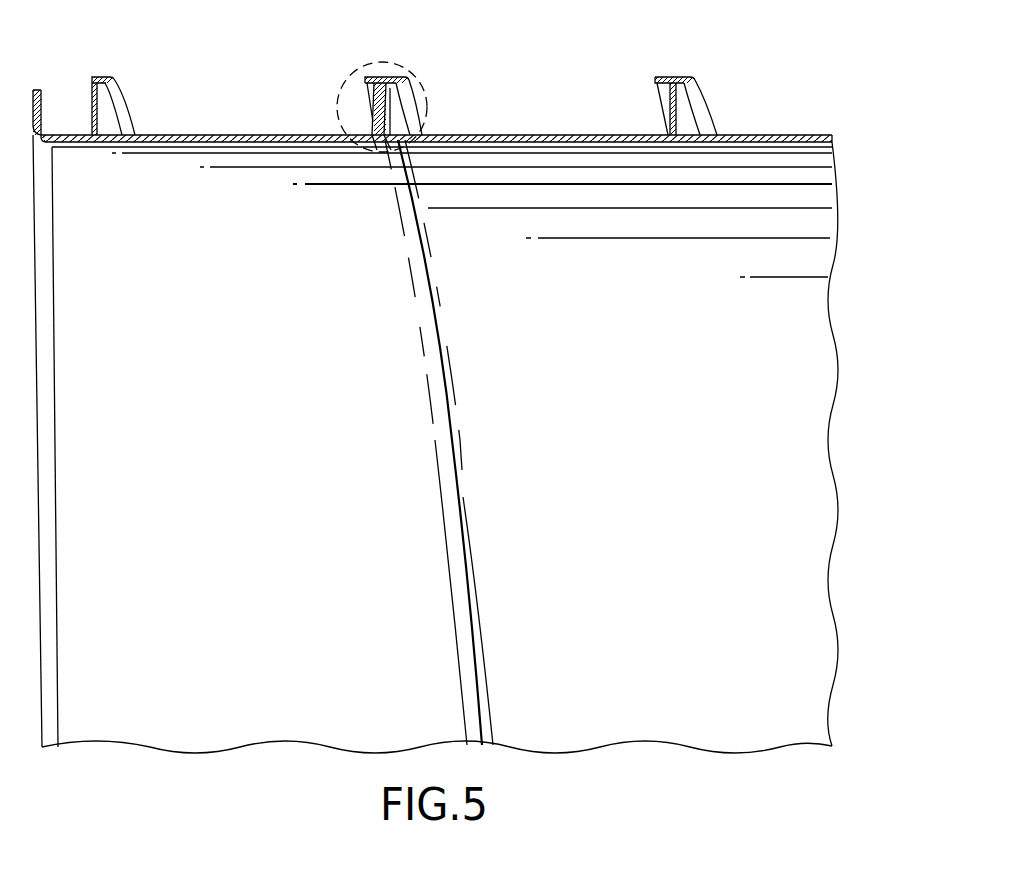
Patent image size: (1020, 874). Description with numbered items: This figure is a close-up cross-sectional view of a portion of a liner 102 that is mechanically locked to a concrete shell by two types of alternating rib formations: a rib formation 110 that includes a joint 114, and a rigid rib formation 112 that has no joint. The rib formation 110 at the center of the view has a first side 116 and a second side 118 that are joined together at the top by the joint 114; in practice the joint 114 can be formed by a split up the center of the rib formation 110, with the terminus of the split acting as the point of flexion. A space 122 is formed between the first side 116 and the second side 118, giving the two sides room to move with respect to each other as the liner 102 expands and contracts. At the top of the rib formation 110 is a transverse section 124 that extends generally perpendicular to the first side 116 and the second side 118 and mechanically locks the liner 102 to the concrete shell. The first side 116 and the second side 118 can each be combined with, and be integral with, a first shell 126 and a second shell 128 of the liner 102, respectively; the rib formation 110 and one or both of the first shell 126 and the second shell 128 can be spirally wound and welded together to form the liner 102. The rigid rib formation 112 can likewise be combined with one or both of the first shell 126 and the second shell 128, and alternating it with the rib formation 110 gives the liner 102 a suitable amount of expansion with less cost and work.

The liner 102 is at (205, 134).
The first shell 126 is at (236, 134).
The second shell 128 is at (566, 134).
The rib formation 110 is at (387, 78).
The rigid rib formation 112 is at (677, 77).
The joint 114 is at (407, 85).
The first side 116 is at (373, 118).
The second side 118 is at (412, 108).
The space 122 is at (412, 125).
The transverse section 124 is at (370, 77).